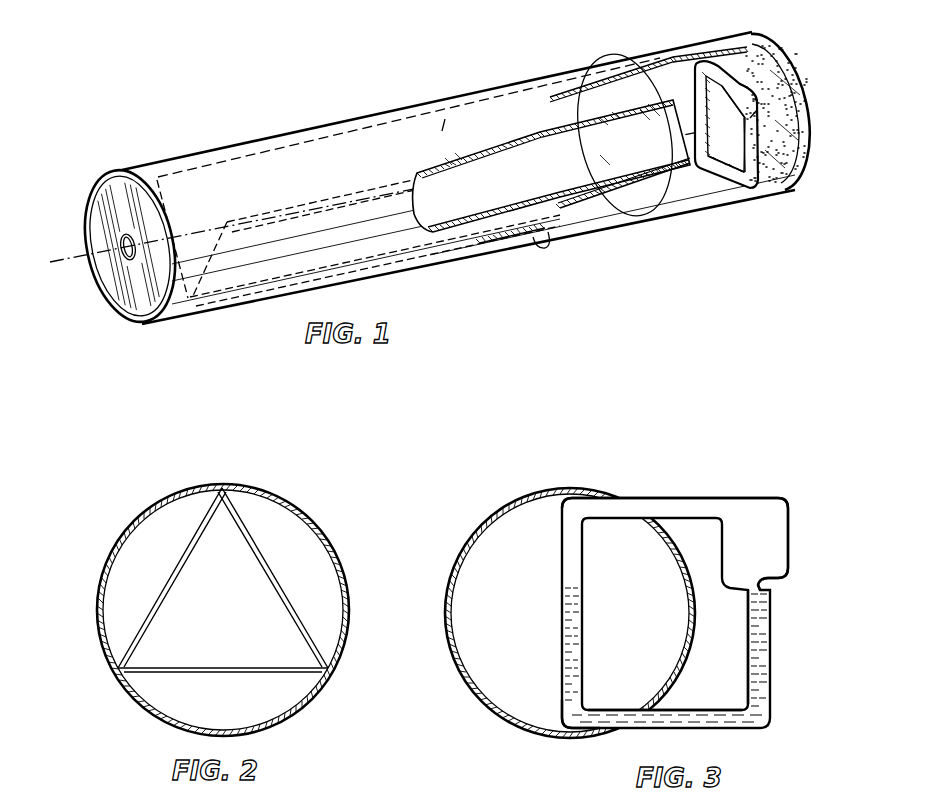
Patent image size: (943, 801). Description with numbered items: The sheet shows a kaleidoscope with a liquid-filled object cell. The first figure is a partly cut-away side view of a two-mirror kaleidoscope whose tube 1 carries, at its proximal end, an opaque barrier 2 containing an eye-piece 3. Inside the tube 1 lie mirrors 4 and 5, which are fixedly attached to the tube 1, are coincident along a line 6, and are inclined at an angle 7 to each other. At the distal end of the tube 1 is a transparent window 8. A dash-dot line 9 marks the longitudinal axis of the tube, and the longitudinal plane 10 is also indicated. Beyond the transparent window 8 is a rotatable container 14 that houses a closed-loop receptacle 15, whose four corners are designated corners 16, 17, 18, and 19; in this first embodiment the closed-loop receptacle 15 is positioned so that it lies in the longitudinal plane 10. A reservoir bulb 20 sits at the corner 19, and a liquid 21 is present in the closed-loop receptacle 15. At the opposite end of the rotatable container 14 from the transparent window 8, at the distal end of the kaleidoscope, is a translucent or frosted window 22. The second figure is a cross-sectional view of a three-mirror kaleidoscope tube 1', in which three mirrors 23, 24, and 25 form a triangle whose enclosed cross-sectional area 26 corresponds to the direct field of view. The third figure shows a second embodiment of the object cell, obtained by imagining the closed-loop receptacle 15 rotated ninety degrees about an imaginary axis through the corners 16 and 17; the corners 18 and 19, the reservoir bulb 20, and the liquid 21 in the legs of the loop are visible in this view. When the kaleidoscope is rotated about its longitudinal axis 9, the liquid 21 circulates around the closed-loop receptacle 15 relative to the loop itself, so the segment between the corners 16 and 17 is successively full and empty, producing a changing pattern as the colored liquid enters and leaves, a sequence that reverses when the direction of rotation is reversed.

In FIG. 1, the tube 1 is at (466, 178).
In FIG. 3, the tube 1 is at (569, 613).
In FIG. 2, the tubular housing (alternative) 1' is at (223, 603).
In FIG. 1, the opaque barrier 2 is at (124, 300).
In FIG. 1, the eye-piece 3 is at (122, 236).
In FIG. 1, the mirror 4 is at (468, 201).
In FIG. 1, the mirror 5 is at (443, 118).
In FIG. 1, the line 6 is at (218, 318).
In FIG. 1, the angle 7 is at (206, 224).
In FIG. 1, the transparent window 8 is at (630, 130).
In FIG. 1, the longitudinal axis 9 is at (70, 255).
In FIG. 1, the longitudinal plane 10 is at (491, 292).
In FIG. 1, the rotatable container 14 is at (653, 50).
In FIG. 1, the closed-loop receptacle 15 is at (760, 172).
In FIG. 3, the closed-loop receptacle 15 is at (774, 669).
In FIG. 1, the corner 16 is at (708, 62).
In FIG. 3, the corner 16 is at (570, 505).
In FIG. 1, the corner 17 is at (703, 172).
In FIG. 3, the corner 17 is at (563, 718).
In FIG. 1, the corner 18 is at (746, 182).
In FIG. 3, the corner 18 is at (763, 727).
In FIG. 1, the corner 19 is at (733, 80).
In FIG. 3, the corner 19 is at (728, 508).
In FIG. 1, the reservoir bulb 20 is at (752, 172).
In FIG. 3, the reservoir bulb 20 is at (768, 546).
In FIG. 1, the liquid 21 is at (724, 190).
In FIG. 3, the liquid 21 is at (758, 665).
In FIG. 1, the translucent/frosted window 22 is at (797, 62).
In FIG. 2, the mirror 23 is at (176, 549).
In FIG. 2, the mirror 24 is at (208, 674).
In FIG. 2, the mirror 25 is at (271, 558).
In FIG. 2, the cross-sectional area corresponding to the direct field of view 26 is at (234, 594).